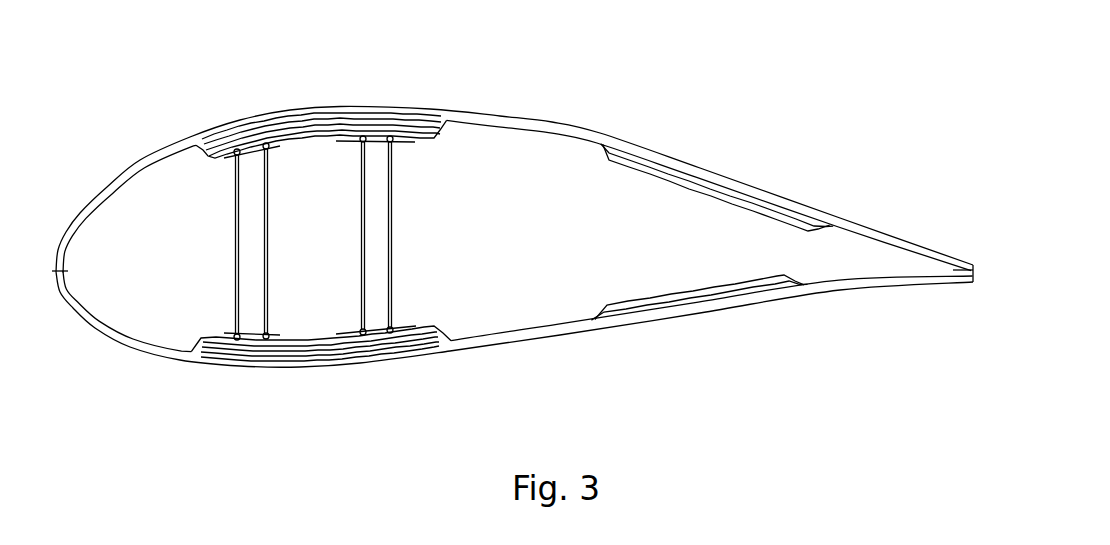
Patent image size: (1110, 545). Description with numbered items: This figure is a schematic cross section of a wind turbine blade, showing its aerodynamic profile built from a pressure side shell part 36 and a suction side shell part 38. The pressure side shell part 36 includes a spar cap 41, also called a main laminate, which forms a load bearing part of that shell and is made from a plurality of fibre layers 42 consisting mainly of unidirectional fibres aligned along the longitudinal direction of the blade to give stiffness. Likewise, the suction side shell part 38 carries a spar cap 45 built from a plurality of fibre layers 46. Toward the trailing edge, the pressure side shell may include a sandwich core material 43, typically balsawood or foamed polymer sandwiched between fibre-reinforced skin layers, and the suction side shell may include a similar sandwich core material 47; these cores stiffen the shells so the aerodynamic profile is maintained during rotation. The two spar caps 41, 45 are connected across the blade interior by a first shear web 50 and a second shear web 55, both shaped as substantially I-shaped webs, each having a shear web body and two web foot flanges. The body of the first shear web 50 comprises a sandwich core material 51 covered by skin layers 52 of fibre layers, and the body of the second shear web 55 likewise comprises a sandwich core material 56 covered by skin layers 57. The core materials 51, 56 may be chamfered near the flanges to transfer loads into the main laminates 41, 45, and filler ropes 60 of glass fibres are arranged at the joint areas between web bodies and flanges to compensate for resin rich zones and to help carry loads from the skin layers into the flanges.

The pressure side shell part 36 is at (568, 337).
The suction side shell part 38 is at (553, 118).
The spar cap 41 is at (403, 362).
The fibre layers 42 is at (316, 368).
The sandwich core material 43 is at (715, 298).
The spar cap 45 is at (280, 112).
The fibre layers 46 is at (395, 113).
The sandwich core material 47 is at (712, 170).
The first shear web 50 is at (293, 238).
The sandwich core material 51 is at (268, 263).
The skin layers 52 is at (268, 193).
The second shear web 55 is at (427, 231).
The sandwich core material 56 is at (394, 261).
The skin layers 57 is at (393, 207).
The filler ropes 60 is at (238, 334).